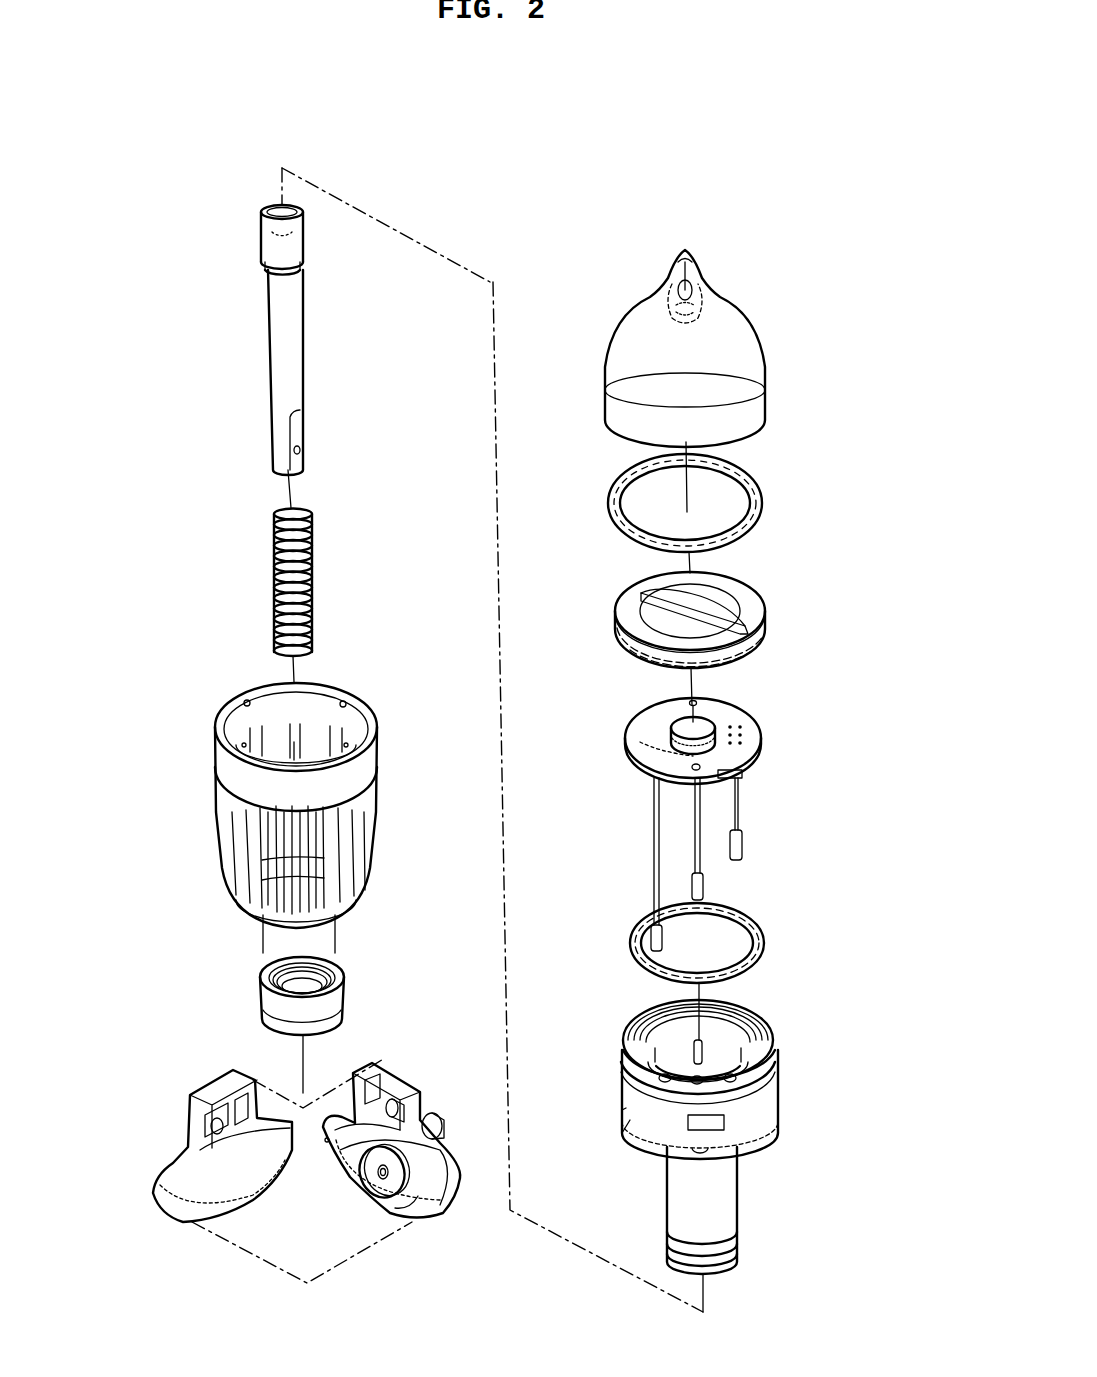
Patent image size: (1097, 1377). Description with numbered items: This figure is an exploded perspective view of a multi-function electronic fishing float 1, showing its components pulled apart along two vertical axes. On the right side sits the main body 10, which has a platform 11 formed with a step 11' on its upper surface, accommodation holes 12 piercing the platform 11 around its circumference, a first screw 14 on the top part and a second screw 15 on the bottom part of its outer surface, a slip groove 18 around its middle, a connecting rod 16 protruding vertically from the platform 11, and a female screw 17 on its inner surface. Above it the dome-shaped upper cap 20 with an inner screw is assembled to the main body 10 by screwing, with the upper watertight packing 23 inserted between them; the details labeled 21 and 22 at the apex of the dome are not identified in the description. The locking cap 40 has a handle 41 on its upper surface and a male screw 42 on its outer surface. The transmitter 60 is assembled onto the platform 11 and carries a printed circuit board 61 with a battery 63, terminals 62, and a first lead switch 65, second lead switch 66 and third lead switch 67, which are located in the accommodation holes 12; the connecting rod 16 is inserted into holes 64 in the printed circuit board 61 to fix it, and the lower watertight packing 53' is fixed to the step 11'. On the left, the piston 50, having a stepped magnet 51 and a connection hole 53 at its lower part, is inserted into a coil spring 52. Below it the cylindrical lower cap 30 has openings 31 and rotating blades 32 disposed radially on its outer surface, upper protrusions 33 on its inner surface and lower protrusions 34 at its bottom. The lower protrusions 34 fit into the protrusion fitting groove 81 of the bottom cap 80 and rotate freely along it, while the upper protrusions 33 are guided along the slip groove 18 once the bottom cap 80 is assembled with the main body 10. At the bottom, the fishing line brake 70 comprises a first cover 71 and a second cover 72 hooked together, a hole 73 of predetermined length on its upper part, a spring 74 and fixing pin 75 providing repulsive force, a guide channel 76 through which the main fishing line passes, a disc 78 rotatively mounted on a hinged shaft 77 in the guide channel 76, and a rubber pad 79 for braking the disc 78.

The multi-function electronic fishing float 1 is at (509, 208).
The main body 10 is at (778, 1043).
The platform 11 is at (658, 1060).
The step 11' is at (739, 1023).
The accommodation holes 12 is at (642, 1084).
The first screw 14 is at (780, 1062).
The second screw 15 is at (738, 1242).
The connecting rod 16 is at (690, 1042).
The female screw 17 is at (730, 1012).
The slip groove 18 is at (636, 1128).
The upper cap 20 is at (746, 350).
The nipple 21 is at (680, 272).
The outlet opening 22 is at (698, 256).
The upper watertight packing 23 is at (772, 478).
The lower cap 30 is at (216, 745).
The openings 31 is at (252, 828).
The rotating blades 32 is at (242, 884).
The upper protrusions 33 is at (245, 700).
The lower protrusions 34 is at (344, 922).
The locking cap 40 is at (774, 619).
The handle 41 is at (708, 602).
The male screw 42 is at (628, 650).
The piston 50 is at (268, 333).
The magnet 51 is at (278, 206).
The coil spring 52 is at (276, 566).
The connection hole 53 is at (331, 450).
The lower watertight packing 53' is at (730, 966).
The transmitter 60 is at (768, 741).
The printed circuit board 61 is at (636, 742).
The terminals 62 is at (740, 722).
The battery 63 is at (680, 722).
The holes 64 is at (700, 768).
The first lead switch 65 is at (744, 848).
The second lead switch 66 is at (692, 882).
The third lead switch 67 is at (650, 938).
The fishing line brake 70 is at (382, 1060).
The first cover 71 is at (428, 1152).
The second cover 72 is at (188, 1145).
The hole 73 is at (380, 1076).
The spring 74 is at (404, 1098).
The fixing pin 75 is at (441, 1122).
The guide channel 76 is at (330, 1148).
The hinged shaft 77 is at (378, 1178).
The disc 78 is at (388, 1188).
The rubber pad 79 is at (406, 1212).
The bottom cap 80 is at (258, 1003).
The protrusion fitting groove 81 is at (345, 984).